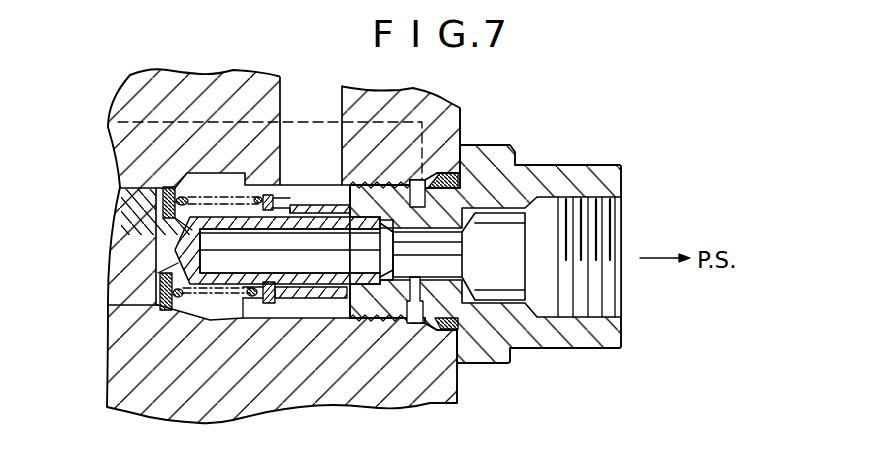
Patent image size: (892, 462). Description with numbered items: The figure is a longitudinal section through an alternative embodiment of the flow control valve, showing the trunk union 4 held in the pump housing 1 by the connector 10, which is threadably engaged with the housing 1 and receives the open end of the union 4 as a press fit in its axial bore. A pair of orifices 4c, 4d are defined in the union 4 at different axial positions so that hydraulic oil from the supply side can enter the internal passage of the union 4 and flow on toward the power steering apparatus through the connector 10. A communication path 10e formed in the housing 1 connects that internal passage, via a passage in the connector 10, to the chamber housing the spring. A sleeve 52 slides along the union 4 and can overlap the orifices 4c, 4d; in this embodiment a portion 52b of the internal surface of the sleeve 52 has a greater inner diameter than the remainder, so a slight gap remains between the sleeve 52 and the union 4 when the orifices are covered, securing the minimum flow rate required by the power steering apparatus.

The pump housing 1 is at (458, 125).
The connector 10 is at (488, 352).
The communication path 10e is at (243, 120).
The trunk union 4 is at (210, 283).
The orifice 4c is at (243, 284).
The orifice 4d is at (250, 215).
The sleeve 52 is at (318, 298).
The greater inner diameter portion 52b is at (268, 303).